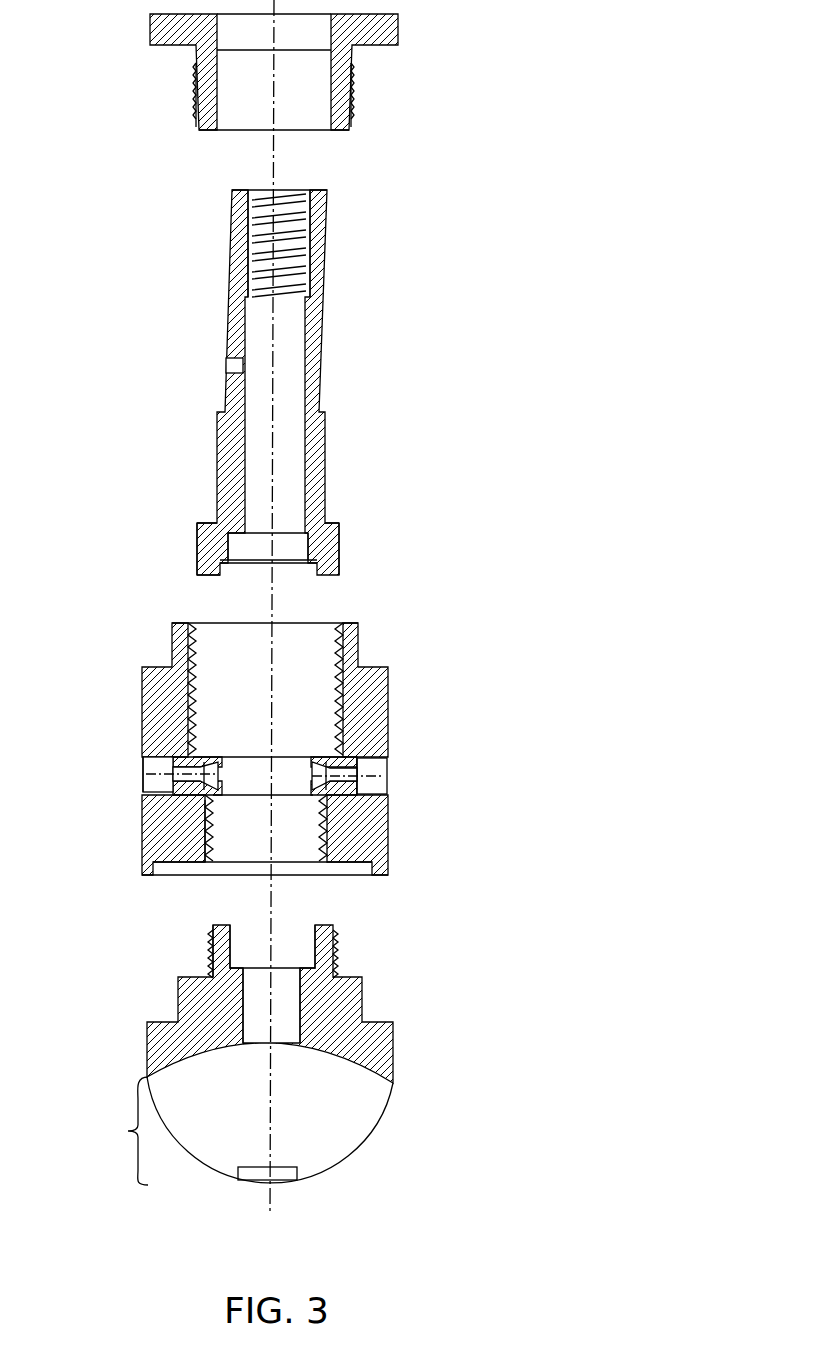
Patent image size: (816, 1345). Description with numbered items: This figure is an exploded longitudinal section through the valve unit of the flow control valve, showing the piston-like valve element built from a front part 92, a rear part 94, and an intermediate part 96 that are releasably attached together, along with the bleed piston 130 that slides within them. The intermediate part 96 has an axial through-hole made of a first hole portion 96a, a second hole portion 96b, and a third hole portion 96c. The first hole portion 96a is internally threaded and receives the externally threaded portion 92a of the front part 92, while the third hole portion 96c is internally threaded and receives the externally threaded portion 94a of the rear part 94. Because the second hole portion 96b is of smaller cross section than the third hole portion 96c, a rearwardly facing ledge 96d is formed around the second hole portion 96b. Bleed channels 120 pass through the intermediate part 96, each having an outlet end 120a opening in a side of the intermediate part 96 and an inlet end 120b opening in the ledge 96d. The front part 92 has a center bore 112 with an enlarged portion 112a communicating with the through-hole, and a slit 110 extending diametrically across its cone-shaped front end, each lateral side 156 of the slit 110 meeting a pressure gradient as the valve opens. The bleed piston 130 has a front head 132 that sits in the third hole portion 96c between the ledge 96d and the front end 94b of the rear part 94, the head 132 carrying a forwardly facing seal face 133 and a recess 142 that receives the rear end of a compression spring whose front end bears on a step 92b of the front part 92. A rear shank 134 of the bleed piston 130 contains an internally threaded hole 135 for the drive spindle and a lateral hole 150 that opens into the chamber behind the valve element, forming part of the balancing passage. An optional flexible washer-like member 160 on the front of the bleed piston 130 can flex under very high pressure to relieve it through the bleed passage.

The rear part 94 is at (298, 85).
The externally threaded portion of the rear part 94a is at (355, 115).
The front end of the rear part 94b is at (205, 126).
The bleed piston 130 is at (277, 399).
The internally threaded hole 135 is at (290, 202).
The rear shank 134 is at (322, 252).
The lateral hole 150 is at (232, 362).
The front head 132 is at (335, 538).
The washer-like member 160 is at (200, 578).
The seal face 133 is at (245, 566).
The recess 142 is at (300, 576).
The intermediate part 96 is at (265, 749).
The first hole portion 96a is at (330, 838).
The second hole portion 96b is at (235, 800).
The third hole portion 96c is at (230, 648).
The rearwardly facing ledge 96d is at (315, 757).
The bleed channel 120 is at (265, 747).
The outlet end of the bleed channel 120a is at (142, 762).
The inlet end of the bleed channel 120b is at (210, 755).
The front part 92 is at (303, 1046).
The externally threaded portion of the front part 92a is at (335, 946).
The step 92b is at (215, 955).
The center bore 112 is at (283, 1036).
The enlarged portion of the center bore 112a is at (245, 945).
The slit 110 is at (380, 1120).
The lateral side of the slit 156 is at (185, 1131).